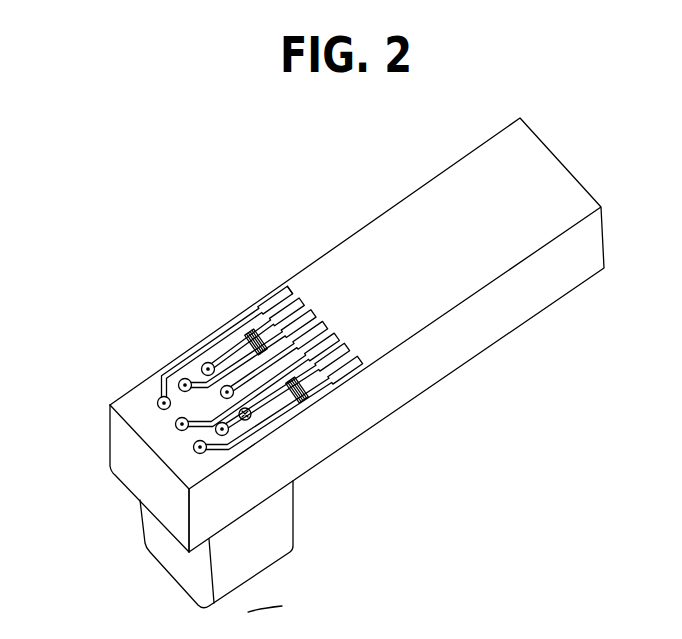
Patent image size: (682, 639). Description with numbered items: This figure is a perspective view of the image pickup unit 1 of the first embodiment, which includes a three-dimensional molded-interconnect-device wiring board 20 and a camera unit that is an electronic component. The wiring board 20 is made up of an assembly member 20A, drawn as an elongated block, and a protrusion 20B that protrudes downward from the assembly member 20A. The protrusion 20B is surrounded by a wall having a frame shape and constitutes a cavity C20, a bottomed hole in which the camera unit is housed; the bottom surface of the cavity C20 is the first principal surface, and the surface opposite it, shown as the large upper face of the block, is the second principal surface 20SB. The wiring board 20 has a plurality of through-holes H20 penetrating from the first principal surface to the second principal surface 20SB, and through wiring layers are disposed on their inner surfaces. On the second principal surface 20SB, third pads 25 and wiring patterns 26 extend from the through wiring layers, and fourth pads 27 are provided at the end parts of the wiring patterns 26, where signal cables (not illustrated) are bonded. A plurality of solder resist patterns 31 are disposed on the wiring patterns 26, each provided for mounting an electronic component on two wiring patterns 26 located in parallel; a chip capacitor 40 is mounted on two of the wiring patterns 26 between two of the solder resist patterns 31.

The image pickup unit 1 is at (152, 207).
The wiring board 20 is at (357, 363).
The assembly member 20A is at (425, 392).
The protrusion 20B is at (294, 534).
The cavity C20 is at (248, 600).
The second principal surface 20SB is at (135, 400).
The third pads 25 is at (170, 369).
The through-holes H20 is at (182, 410).
The wiring patterns 26 is at (220, 347).
The fourth pads 27 is at (276, 296).
The solder resist patterns 31 is at (250, 333).
The chip capacitor 40 is at (300, 401).